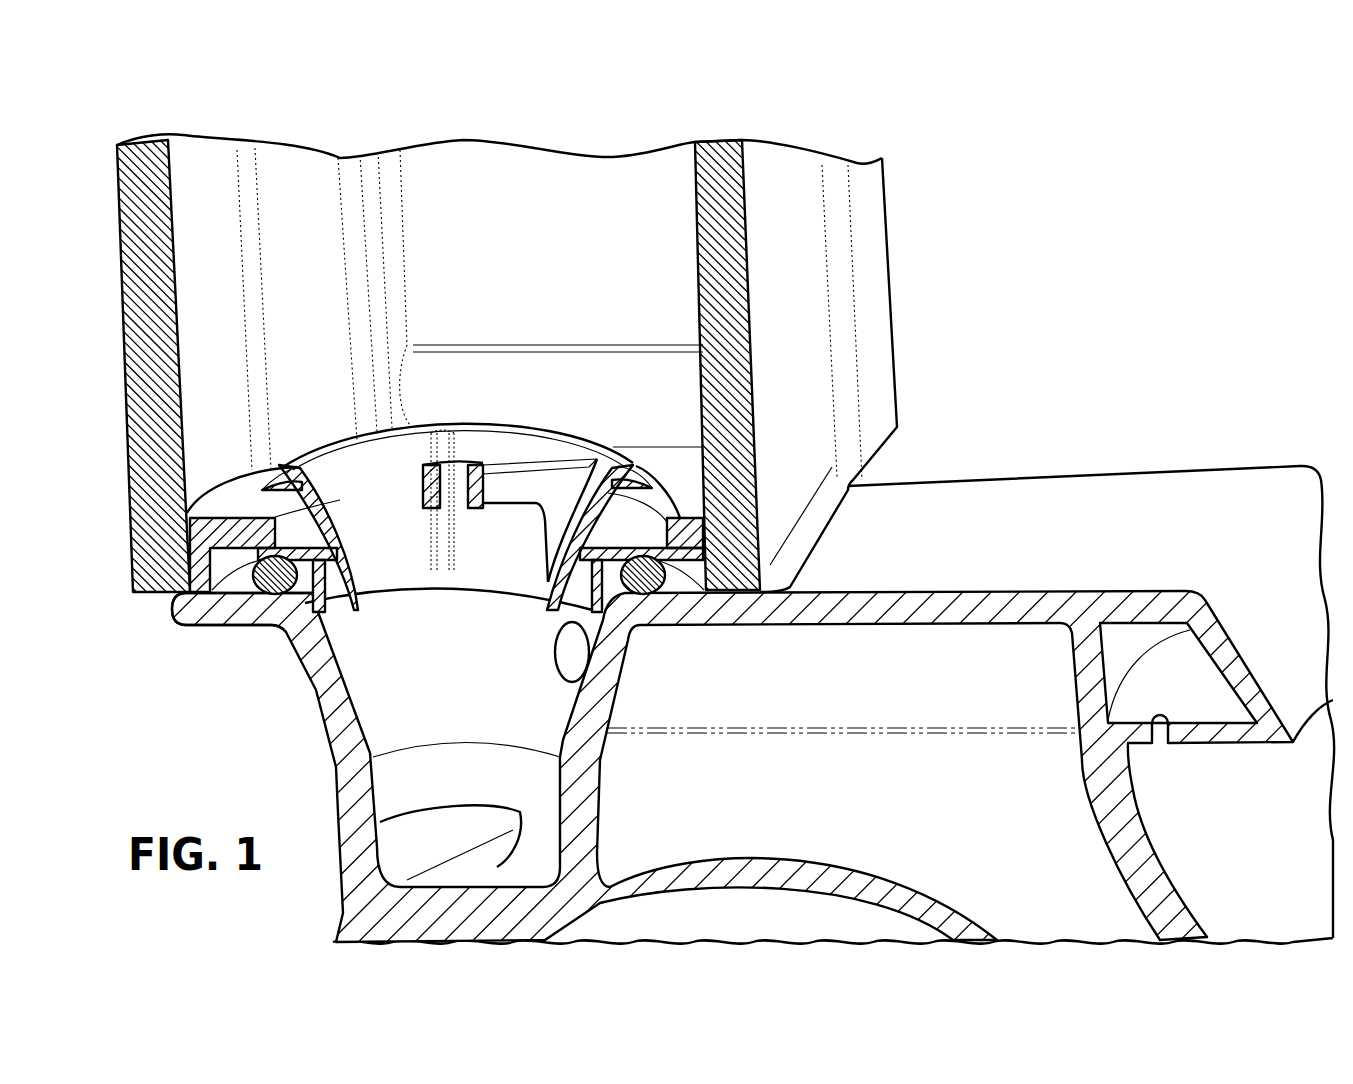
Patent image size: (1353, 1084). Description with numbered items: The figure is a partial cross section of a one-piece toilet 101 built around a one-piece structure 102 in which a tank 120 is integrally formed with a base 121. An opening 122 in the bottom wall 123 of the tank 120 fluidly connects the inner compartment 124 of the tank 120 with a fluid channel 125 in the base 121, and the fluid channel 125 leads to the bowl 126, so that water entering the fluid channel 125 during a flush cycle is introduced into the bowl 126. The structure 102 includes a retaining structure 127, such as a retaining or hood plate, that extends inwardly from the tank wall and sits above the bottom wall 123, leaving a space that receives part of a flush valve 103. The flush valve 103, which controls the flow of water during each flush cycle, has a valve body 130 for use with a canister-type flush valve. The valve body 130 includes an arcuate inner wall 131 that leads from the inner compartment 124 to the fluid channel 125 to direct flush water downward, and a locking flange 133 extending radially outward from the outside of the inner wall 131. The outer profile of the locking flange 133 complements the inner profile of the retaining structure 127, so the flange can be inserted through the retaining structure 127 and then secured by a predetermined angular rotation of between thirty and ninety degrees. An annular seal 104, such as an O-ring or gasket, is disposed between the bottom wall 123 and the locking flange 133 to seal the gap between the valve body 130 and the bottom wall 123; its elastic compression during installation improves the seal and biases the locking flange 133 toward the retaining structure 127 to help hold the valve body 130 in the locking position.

The one-piece toilet 101 is at (695, 566).
The one-piece structure 102 is at (723, 605).
The flush valve 103 is at (499, 365).
The annular seal 104 is at (277, 583).
The tank 120 is at (920, 246).
The base 121 is at (723, 634).
The opening 122 is at (442, 607).
The bottom wall 123 is at (203, 613).
The inner compartment 124 is at (555, 264).
The fluid channel 125 is at (482, 701).
The bowl 126 is at (1261, 836).
The retaining structure 127 is at (220, 531).
The valve body 130 is at (474, 456).
The inner wall 131 is at (343, 495).
The locking flange 133 is at (640, 550).